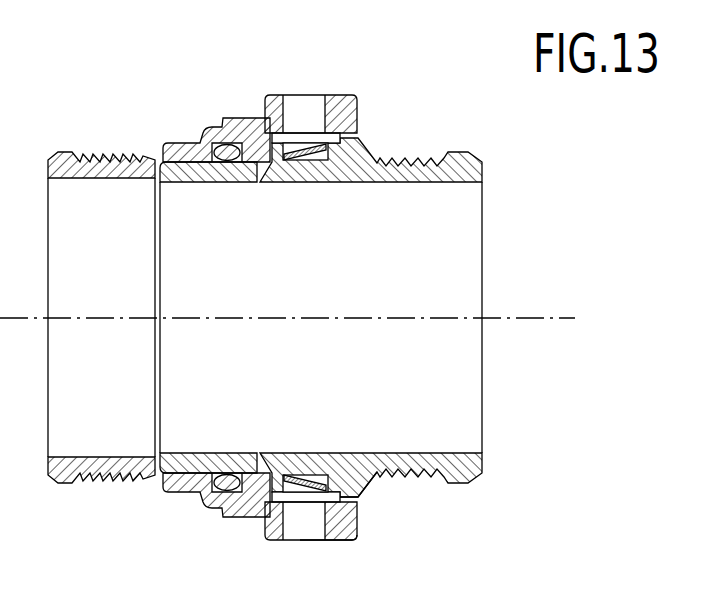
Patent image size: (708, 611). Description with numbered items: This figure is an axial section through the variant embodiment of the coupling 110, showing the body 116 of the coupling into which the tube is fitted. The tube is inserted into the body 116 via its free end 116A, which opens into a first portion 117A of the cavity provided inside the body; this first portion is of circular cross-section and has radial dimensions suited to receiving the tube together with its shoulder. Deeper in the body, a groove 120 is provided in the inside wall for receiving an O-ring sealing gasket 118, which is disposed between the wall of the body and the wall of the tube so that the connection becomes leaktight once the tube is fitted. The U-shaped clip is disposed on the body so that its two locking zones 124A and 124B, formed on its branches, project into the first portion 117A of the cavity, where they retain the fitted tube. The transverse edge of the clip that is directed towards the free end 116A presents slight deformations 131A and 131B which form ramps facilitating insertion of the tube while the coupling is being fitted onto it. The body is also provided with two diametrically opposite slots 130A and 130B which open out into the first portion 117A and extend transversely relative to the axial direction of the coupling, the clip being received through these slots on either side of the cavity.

The coupling 110 is at (137, 498).
The body 116 is at (238, 507).
The free end 116A is at (345, 540).
The first portion 117A is at (370, 490).
The O-ring sealing gasket 118 is at (221, 143).
The groove 120 is at (258, 184).
The locking zone 124A is at (284, 474).
The locking zone 124B is at (293, 162).
The slot 130A is at (308, 525).
The slot 130B is at (308, 115).
The deformation 131A is at (322, 476).
The deformation 131B is at (318, 160).